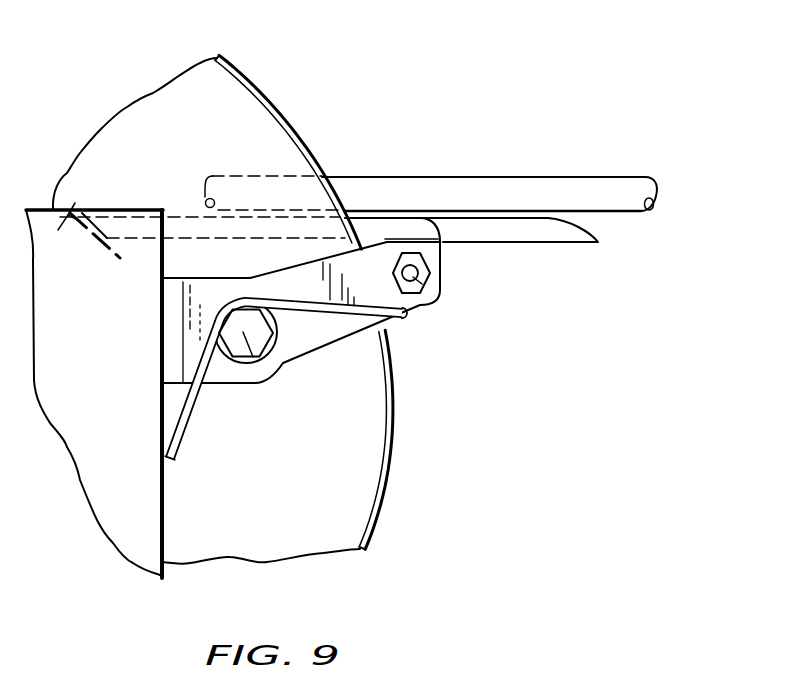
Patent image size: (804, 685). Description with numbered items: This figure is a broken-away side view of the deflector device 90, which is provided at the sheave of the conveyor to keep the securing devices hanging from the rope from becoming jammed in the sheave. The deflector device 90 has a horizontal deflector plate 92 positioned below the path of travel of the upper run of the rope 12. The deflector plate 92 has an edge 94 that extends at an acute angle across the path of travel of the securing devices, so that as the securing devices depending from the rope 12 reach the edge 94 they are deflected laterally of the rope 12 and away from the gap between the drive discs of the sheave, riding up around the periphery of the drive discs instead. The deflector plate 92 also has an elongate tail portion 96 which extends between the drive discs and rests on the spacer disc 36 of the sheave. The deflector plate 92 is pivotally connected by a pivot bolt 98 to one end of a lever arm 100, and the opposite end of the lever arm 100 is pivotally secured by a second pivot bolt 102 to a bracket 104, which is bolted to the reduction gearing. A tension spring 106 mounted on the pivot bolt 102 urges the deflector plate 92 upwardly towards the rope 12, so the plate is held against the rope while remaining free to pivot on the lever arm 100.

The deflector device 90 is at (345, 74).
The elongate tail portion 96 is at (246, 184).
The spacer disc 36 is at (125, 258).
The deflector plate 92 is at (407, 230).
The rope 12 is at (531, 190).
The edge 94 is at (547, 232).
The pivot bolt 98 is at (422, 278).
The tension spring 106 is at (313, 343).
The lever arm 100 is at (322, 352).
The pivot bolt 102 is at (262, 385).
The bracket 104 is at (240, 378).